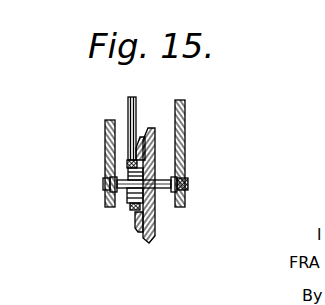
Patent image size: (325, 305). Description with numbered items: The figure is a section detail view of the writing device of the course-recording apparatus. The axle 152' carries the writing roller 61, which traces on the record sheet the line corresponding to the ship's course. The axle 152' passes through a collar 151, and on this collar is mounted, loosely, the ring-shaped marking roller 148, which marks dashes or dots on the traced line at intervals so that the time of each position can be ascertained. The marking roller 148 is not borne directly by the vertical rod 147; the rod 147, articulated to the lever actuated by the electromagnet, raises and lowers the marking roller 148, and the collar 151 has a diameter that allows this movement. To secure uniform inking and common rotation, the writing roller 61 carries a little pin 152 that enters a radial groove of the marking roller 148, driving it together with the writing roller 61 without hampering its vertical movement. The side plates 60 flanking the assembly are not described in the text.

The side plates 60 is at (105, 135).
The writing roller 61 is at (149, 129).
The vertical rod 147 is at (127, 105).
The marking roller 148 is at (135, 228).
The collar 151 is at (133, 210).
The pin 152 is at (174, 188).
The axle 152' is at (174, 180).